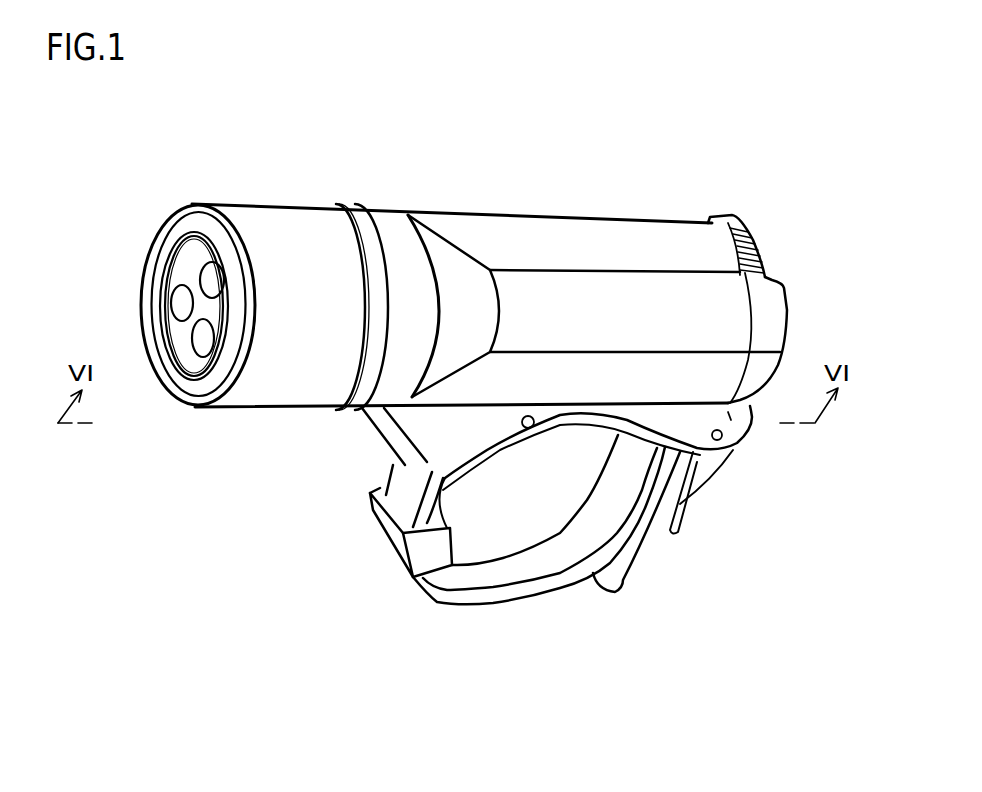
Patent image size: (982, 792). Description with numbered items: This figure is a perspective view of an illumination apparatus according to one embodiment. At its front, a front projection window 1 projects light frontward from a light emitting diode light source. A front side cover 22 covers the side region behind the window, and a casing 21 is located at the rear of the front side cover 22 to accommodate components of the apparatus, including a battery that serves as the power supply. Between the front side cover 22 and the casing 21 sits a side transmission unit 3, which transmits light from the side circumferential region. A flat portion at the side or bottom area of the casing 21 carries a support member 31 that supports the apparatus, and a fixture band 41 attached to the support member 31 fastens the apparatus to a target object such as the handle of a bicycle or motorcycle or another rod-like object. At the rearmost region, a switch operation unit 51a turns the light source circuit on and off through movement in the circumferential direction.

The front projection window 1 is at (185, 347).
The front side cover 22 is at (277, 225).
The casing 21 is at (592, 238).
The switch operation unit 51a is at (740, 219).
The side transmission unit 3 is at (350, 403).
The support member 31 is at (397, 430).
The fixture band 41 is at (547, 643).